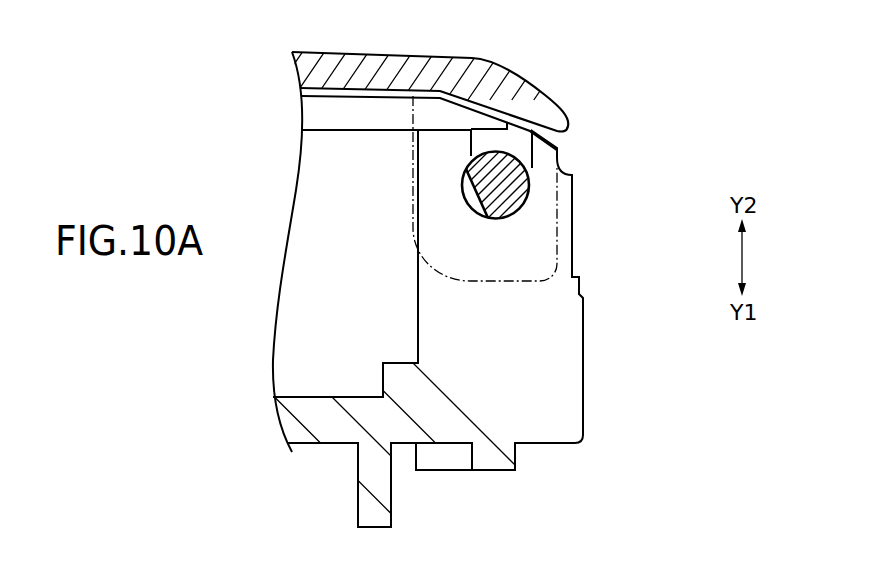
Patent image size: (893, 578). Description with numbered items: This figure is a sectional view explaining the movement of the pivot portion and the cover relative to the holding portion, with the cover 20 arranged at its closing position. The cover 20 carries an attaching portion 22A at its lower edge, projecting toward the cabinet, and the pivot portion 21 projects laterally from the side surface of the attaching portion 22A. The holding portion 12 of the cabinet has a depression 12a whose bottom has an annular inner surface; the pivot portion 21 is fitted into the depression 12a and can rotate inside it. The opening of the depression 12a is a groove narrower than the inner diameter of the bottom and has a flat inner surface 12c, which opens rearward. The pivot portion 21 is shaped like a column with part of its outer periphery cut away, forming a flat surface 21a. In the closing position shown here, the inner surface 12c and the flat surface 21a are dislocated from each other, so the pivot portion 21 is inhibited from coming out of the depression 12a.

The holding portion 12 is at (569, 371).
The depression 12a is at (511, 206).
The inner surface 12c is at (473, 143).
The cover 20 is at (384, 68).
The pivot portion 21 is at (517, 183).
The flat surface 21a is at (467, 198).
The attaching portion 22A is at (558, 206).